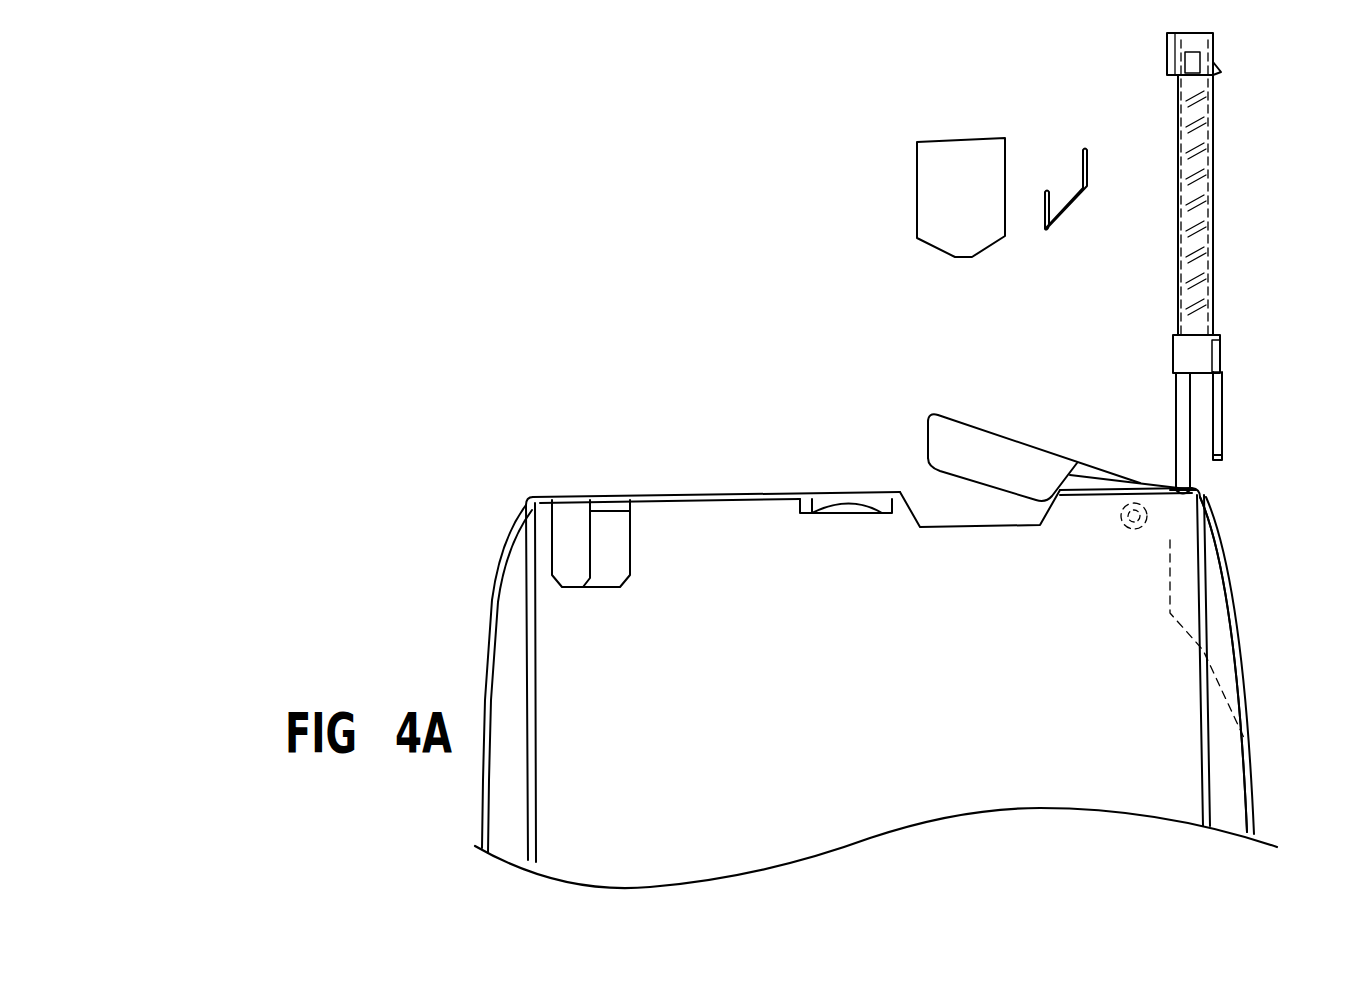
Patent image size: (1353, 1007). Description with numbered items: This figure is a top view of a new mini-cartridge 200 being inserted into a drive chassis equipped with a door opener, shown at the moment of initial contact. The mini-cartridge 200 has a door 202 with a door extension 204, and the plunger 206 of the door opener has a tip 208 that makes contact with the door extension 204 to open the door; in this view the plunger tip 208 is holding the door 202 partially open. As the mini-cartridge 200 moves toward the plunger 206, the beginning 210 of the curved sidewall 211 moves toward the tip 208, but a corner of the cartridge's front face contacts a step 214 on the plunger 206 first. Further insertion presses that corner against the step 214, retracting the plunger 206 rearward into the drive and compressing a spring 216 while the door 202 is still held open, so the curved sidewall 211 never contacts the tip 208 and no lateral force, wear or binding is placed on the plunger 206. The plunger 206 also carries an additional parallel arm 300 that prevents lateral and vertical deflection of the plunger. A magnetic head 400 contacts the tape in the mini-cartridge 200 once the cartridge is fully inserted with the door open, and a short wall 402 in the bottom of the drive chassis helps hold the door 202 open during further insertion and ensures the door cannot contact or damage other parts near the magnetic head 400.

The mini-cartridge 200 is at (852, 821).
The door 202 is at (968, 423).
The door extension 204 is at (1175, 510).
The plunger 206 is at (1177, 422).
The tip 208 is at (1223, 490).
The beginning of the curved sidewall 210 is at (1170, 613).
The curved sidewall 211 is at (1215, 667).
The step 214 is at (1180, 377).
The spring 216 is at (1213, 92).
The parallel arm 300 is at (1223, 402).
The magnetic head 400 is at (933, 253).
The short wall 402 is at (1080, 202).